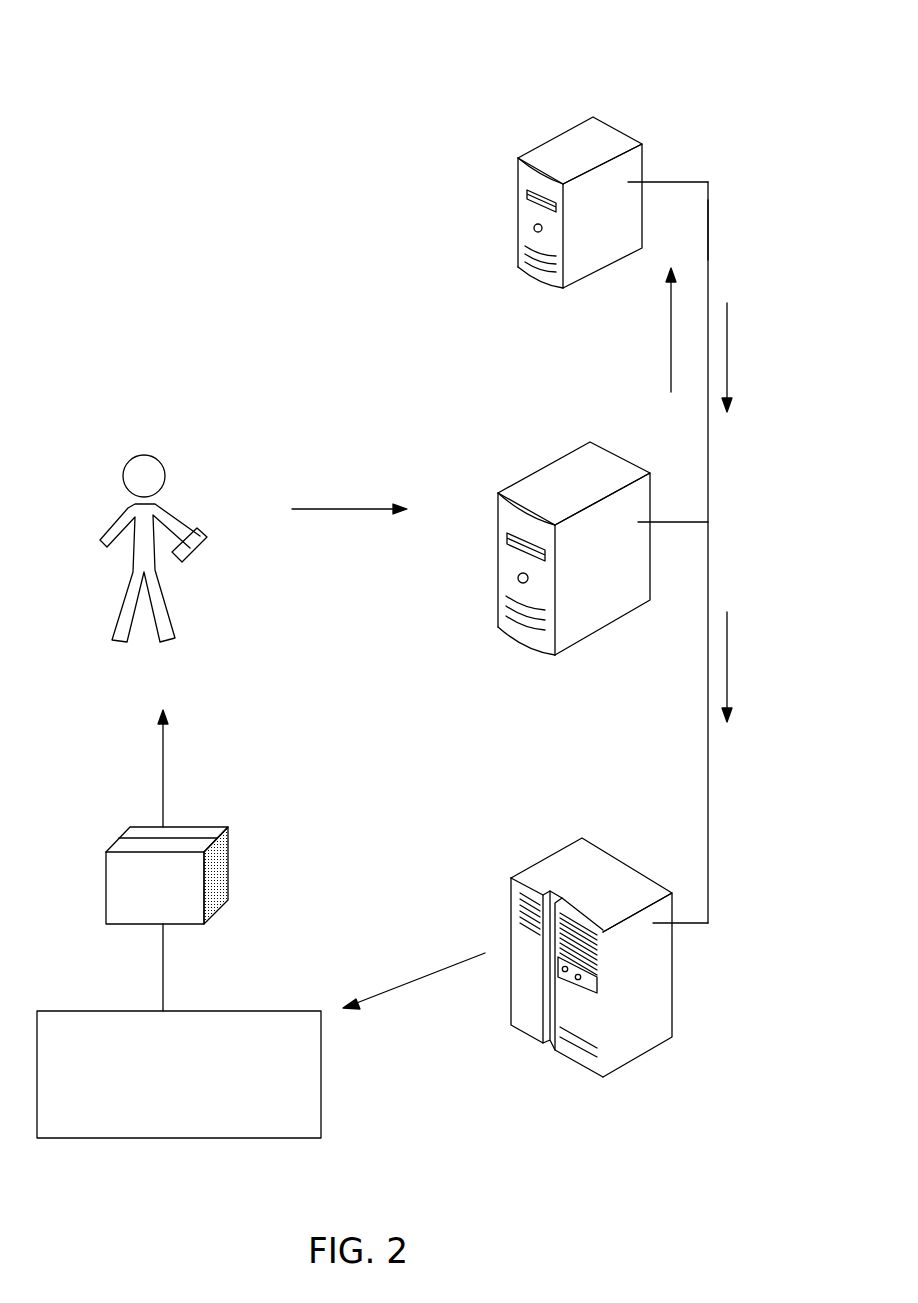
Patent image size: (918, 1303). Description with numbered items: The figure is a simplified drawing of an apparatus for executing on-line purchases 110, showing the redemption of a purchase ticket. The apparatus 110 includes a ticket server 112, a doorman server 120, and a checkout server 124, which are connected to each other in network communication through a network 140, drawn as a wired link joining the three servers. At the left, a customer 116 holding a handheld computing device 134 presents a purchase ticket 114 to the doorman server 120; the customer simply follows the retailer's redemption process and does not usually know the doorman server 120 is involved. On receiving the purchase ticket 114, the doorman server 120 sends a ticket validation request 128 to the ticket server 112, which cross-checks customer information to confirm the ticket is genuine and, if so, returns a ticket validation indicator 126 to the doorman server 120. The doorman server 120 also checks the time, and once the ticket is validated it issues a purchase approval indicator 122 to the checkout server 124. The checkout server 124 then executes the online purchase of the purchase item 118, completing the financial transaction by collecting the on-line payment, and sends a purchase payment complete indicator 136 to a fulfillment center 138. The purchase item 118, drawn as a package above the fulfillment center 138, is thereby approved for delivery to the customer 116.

The apparatus for executing on-line purchases 110 is at (690, 91).
The ticket server 112 is at (555, 150).
The purchase ticket 114 is at (330, 509).
The customer 116 is at (138, 470).
The purchase item 118 is at (120, 845).
The doorman server 120 is at (558, 487).
The purchase approval indicator 122 is at (727, 657).
The checkout server 124 is at (577, 862).
The ticket validation indicator 126 is at (728, 350).
The ticket validation request 128 is at (670, 303).
The computing device 134 is at (197, 528).
The purchase payment complete indicator 136 is at (403, 987).
The fulfillment center 138 is at (243, 1099).
The network 140 is at (708, 257).